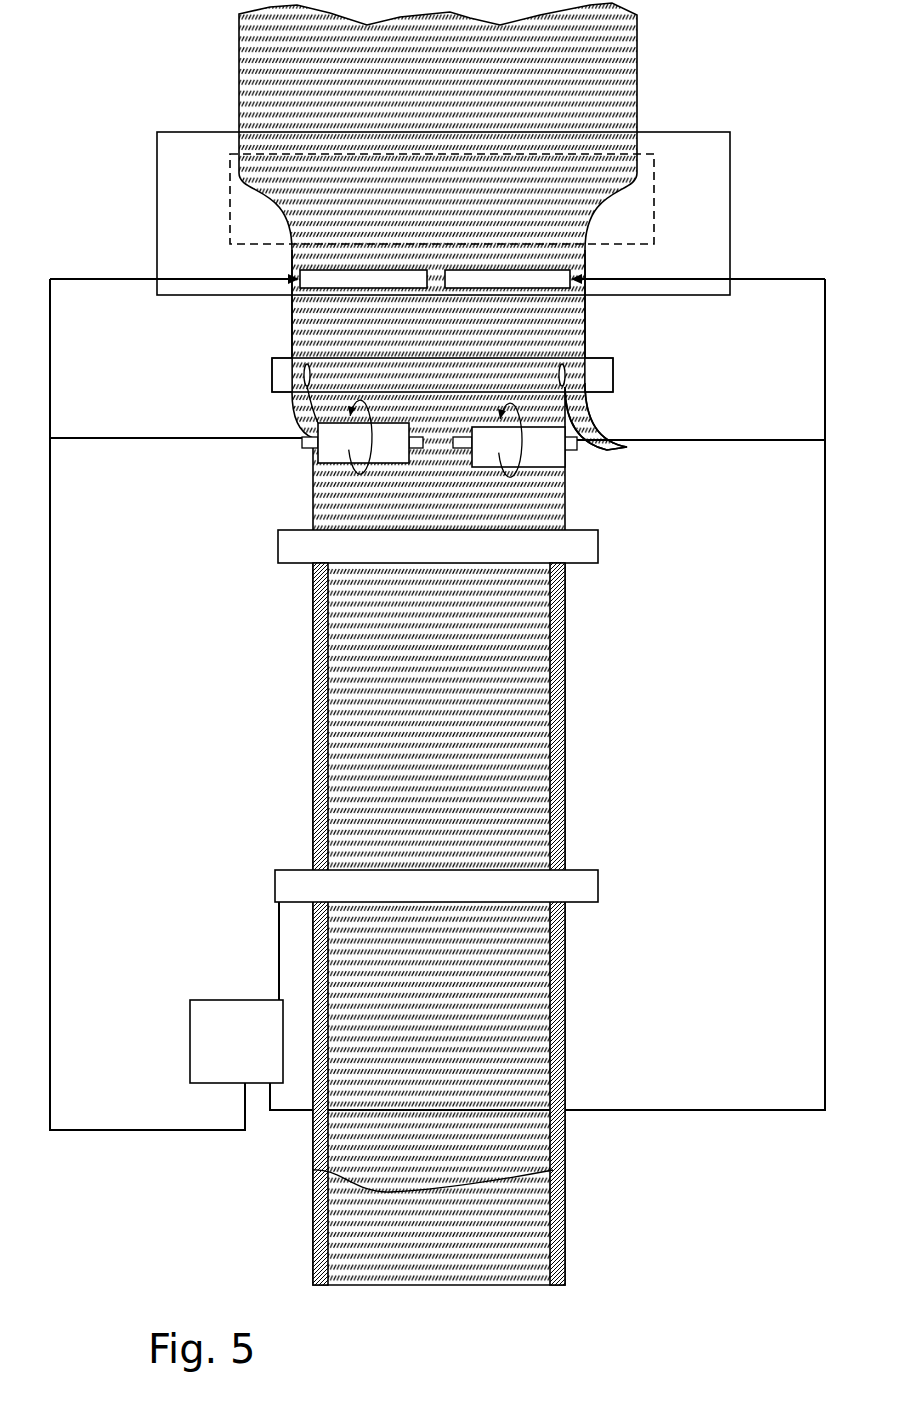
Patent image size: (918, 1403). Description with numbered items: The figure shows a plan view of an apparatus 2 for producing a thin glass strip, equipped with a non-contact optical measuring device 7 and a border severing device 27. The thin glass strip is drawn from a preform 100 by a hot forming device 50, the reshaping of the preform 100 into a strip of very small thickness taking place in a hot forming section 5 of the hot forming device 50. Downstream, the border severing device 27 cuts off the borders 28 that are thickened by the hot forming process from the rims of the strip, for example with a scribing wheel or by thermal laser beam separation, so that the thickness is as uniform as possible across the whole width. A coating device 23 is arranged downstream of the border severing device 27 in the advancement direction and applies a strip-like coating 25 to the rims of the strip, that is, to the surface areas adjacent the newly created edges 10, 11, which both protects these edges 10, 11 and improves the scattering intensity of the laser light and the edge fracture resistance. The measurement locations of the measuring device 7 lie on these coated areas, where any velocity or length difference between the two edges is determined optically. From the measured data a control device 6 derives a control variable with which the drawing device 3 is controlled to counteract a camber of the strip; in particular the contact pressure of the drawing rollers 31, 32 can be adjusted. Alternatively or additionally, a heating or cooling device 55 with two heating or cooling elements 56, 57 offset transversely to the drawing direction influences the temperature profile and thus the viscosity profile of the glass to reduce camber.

The preform 100 is at (637, 87).
The hot forming device 50 is at (730, 185).
The hot forming section 5 is at (228, 210).
The heating or cooling element 56 is at (293, 268).
The heating or cooling element 57 is at (583, 265).
The apparatus 2 is at (755, 320).
The heating or cooling device 55 is at (317, 312).
The drawing device 3 is at (230, 408).
The border severing device 27 is at (612, 387).
The border 28 is at (613, 423).
The drawing roller 31 is at (327, 462).
The drawing roller 32 is at (532, 462).
The coating device 23 is at (278, 555).
The non-contact optical measuring device 7 is at (275, 880).
The control device 6 is at (246, 1065).
The strip-like coating 25 is at (322, 1227).
The edge 10 is at (313, 1272).
The edge 11 is at (567, 1248).